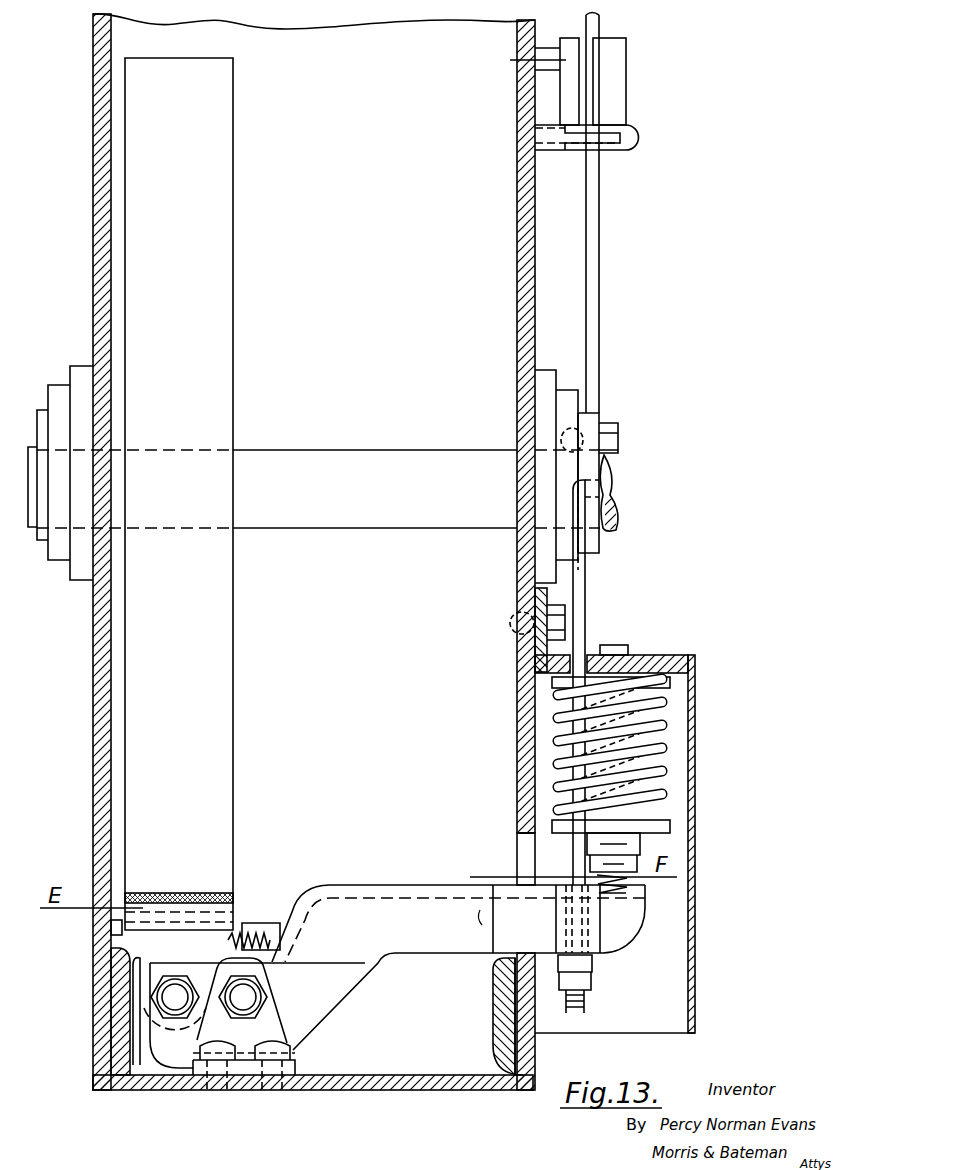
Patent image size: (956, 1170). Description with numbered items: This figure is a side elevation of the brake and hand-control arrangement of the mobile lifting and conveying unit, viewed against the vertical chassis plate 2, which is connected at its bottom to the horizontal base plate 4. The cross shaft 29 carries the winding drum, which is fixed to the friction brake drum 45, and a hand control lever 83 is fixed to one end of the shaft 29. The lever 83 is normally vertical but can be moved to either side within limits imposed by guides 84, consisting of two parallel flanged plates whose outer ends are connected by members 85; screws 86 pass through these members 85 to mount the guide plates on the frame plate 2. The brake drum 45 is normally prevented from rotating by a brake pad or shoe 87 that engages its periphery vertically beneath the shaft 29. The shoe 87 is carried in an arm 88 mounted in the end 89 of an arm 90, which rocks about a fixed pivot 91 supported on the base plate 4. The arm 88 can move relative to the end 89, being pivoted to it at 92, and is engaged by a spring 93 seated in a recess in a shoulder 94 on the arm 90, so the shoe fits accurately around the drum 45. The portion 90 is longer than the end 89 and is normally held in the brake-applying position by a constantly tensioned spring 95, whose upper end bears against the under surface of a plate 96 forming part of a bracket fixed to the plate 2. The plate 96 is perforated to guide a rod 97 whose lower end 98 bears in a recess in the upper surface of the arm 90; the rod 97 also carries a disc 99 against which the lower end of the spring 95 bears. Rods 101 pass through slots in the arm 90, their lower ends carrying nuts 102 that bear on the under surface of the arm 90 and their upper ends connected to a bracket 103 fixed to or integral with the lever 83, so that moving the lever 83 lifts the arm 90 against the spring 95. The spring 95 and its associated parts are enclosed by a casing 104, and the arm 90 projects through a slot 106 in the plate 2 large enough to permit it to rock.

The vertical plate 2 is at (518, 550).
The horizontal plate 4 is at (385, 1076).
The cross shaft 29 is at (330, 458).
The friction drum 45 is at (213, 353).
The hand control lever 83 is at (598, 313).
The guides 84 is at (610, 82).
The members 85 is at (543, 143).
The screws 86 is at (634, 150).
The brake pad or shoe 87 is at (233, 896).
The arm 88 is at (137, 940).
The end of arm 89 is at (147, 1032).
The arm 90 is at (342, 900).
The fixed pivot 91 is at (245, 1000).
The pivot 92 is at (176, 990).
The spring 93 is at (238, 945).
The shoulder 94 is at (296, 929).
The spring 95 is at (555, 757).
The plate 96 is at (640, 655).
The rod 97 is at (612, 648).
The lower end of rod 98 is at (597, 877).
The disc 99 is at (570, 818).
The rods 101 is at (575, 640).
The nuts 102 is at (593, 966).
The bracket 103 is at (592, 545).
The casing 104 is at (693, 953).
The slot 106 is at (532, 842).